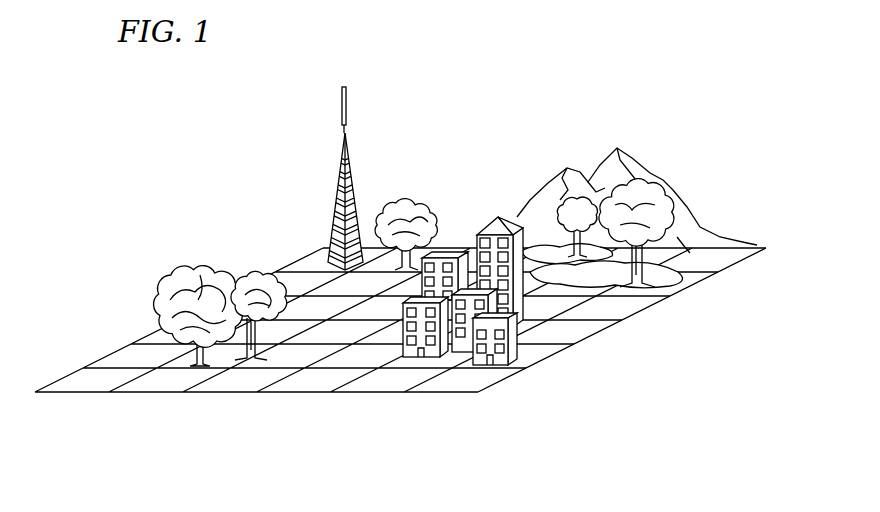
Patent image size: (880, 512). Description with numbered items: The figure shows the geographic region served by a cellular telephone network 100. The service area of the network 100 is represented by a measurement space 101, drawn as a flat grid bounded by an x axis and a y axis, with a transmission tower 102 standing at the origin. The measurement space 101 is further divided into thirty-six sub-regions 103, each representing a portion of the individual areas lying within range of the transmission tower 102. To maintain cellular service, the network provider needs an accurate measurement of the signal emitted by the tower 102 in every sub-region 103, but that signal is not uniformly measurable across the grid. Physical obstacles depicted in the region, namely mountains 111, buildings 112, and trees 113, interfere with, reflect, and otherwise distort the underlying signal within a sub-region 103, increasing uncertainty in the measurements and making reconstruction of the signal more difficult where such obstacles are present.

The network 100 is at (193, 104).
The measurement space 101 is at (460, 374).
The transmission tower 102 is at (341, 106).
The sub-regions 103 is at (587, 327).
The mountains 111 is at (623, 148).
The buildings 112 is at (492, 216).
The trees 113 is at (412, 203).